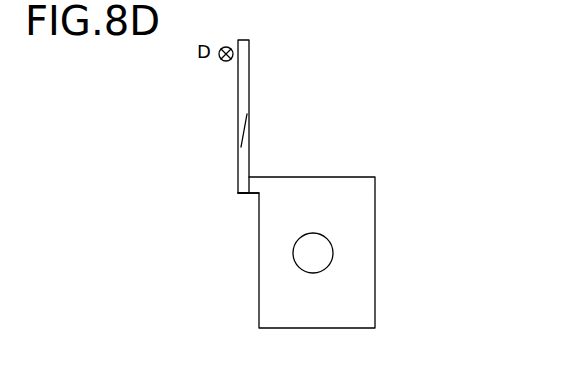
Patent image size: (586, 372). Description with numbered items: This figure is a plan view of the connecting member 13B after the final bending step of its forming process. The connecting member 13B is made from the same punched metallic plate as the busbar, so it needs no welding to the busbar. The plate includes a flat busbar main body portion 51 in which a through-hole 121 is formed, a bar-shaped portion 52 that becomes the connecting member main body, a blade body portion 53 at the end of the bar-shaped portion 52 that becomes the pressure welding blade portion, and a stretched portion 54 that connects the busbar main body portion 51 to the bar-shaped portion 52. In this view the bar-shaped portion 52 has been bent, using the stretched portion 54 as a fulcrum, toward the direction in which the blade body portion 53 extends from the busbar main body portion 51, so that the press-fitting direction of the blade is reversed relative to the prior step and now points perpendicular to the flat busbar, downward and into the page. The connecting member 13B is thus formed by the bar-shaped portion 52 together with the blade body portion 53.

The connecting member 13B is at (413, 139).
The busbar main body portion 51 is at (362, 224).
The bar-shaped portion 52 is at (243, 117).
The blade body portion 53 is at (249, 55).
The stretched portion 54 is at (248, 195).
The through-hole 121 is at (327, 243).